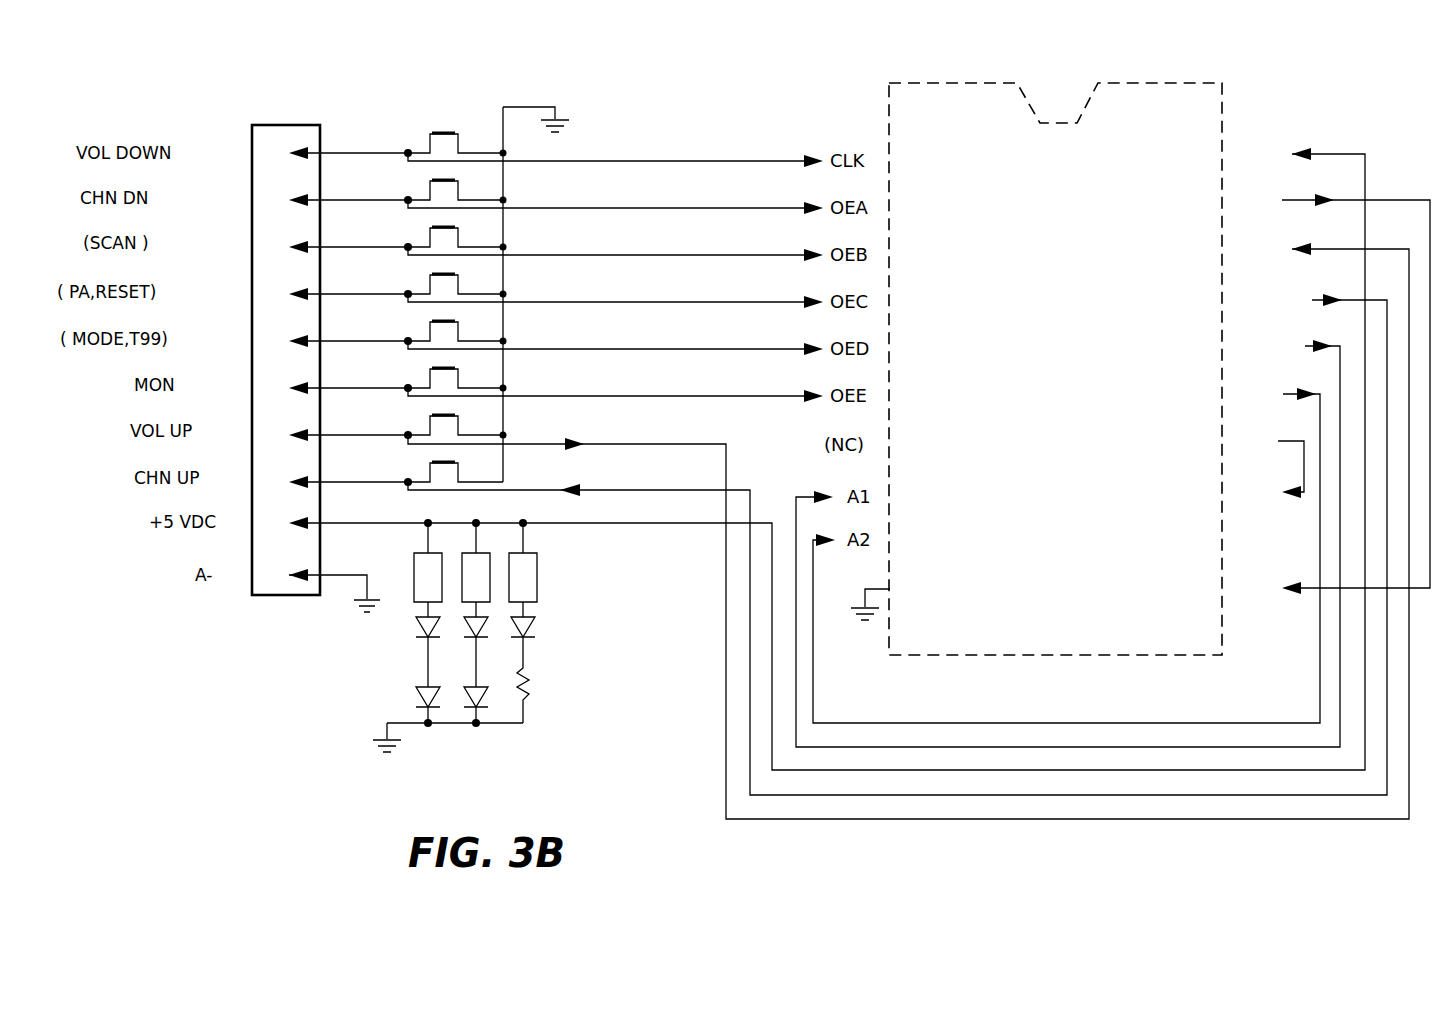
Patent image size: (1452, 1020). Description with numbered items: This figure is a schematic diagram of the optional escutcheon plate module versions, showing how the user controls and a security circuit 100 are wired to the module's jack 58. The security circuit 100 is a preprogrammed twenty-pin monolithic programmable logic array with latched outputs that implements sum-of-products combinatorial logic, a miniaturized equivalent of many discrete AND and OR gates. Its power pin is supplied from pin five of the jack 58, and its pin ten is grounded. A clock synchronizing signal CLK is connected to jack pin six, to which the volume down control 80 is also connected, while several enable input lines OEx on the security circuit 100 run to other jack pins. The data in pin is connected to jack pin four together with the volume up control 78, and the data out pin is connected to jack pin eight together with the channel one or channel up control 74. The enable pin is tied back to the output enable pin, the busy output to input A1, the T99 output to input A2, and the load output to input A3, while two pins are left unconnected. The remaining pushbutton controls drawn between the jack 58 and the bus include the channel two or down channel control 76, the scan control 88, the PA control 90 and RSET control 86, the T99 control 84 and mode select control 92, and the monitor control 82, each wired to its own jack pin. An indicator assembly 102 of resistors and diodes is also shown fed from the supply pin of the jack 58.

The jack 58 is at (265, 597).
The volume down button 80 is at (430, 143).
The channel 2 selector button 76 is at (428, 190).
The scan control 88 is at (428, 237).
The PA control 90 is at (428, 284).
The RSET control 86 is at (563, 280).
The T99 control 84 is at (428, 331).
The mode select control 92 is at (563, 327).
The monitor button 82 is at (428, 378).
The volume up button 78 is at (428, 425).
The channel 1 selector button 74 is at (428, 472).
The LED indicator assembly 102 is at (372, 663).
The security circuit 100 is at (1222, 83).